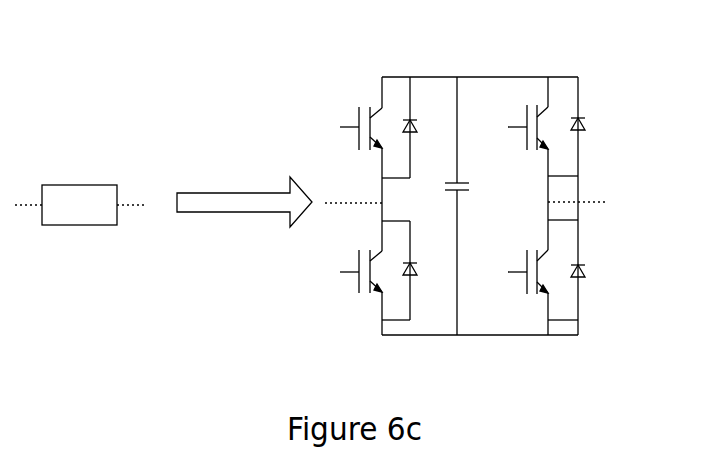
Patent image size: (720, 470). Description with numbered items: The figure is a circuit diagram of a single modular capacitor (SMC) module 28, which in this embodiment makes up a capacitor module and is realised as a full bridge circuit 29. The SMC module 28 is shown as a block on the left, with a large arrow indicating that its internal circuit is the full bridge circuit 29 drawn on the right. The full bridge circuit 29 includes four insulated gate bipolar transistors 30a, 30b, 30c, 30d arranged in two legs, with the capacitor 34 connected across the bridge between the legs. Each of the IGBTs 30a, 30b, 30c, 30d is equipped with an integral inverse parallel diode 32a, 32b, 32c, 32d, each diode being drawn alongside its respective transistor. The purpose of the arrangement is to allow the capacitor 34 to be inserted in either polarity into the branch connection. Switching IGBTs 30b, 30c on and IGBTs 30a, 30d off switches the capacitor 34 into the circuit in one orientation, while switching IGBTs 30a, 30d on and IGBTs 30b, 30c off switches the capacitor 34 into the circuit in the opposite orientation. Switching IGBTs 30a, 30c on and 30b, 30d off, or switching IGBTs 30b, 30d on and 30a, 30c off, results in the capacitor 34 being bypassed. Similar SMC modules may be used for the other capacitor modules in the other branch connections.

The single modular capacitor (SMC) module 28 is at (80, 183).
The full bridge circuit 29 is at (280, 273).
The insulated gate bipolar transistor (IGBT) 30a is at (363, 103).
The insulated gate bipolar transistor (IGBT) 30b is at (360, 293).
The insulated gate bipolar transistor (IGBT) 30c is at (535, 105).
The insulated gate bipolar transistor (IGBT) 30d is at (528, 305).
The integral inverse parallel diode 32a is at (404, 118).
The integral inverse parallel diode 32b is at (413, 297).
The integral inverse parallel diode 32c is at (583, 118).
The integral inverse parallel diode 32d is at (584, 270).
The capacitor 34 is at (470, 193).